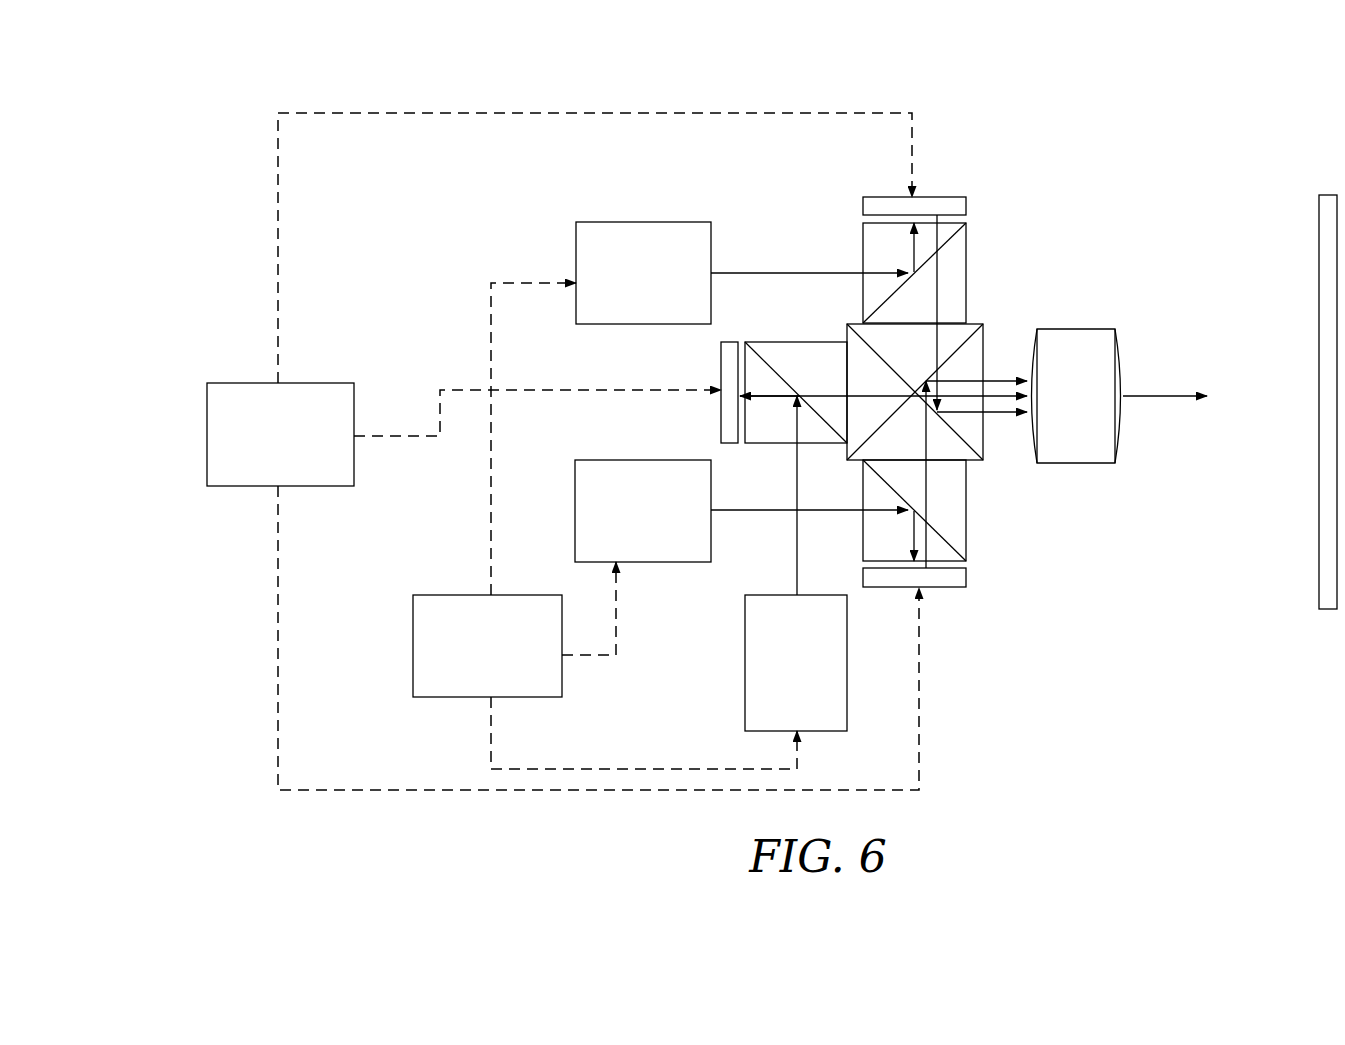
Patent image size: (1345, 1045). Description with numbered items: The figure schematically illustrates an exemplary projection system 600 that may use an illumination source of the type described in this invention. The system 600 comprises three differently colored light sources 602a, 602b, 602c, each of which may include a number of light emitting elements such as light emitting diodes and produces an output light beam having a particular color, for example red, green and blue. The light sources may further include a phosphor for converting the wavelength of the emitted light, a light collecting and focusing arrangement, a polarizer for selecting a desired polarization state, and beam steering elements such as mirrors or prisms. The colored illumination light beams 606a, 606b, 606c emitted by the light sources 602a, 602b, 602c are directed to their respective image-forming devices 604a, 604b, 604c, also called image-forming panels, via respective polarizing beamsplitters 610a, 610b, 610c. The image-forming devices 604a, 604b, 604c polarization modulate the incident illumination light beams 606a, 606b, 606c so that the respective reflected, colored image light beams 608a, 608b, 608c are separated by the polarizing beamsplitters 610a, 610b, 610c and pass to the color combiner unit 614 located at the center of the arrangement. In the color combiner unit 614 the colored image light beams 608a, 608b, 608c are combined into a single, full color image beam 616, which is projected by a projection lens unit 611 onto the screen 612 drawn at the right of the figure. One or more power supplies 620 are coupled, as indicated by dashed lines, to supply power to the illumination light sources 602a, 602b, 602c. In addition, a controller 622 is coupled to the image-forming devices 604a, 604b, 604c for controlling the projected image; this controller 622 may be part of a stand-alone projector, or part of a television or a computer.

The projection system 600 is at (267, 83).
The light source 602a is at (576, 247).
The light source 602b is at (745, 677).
The light source 602c is at (575, 488).
The image-forming device 604a is at (953, 199).
The image-forming device 604b is at (720, 381).
The image-forming device 604c is at (940, 587).
The illumination light beam 606a is at (738, 273).
The illumination light beam 606b is at (805, 592).
The illumination light beam 606c is at (735, 510).
The image light beam 608a is at (940, 283).
The image light beam 608b is at (743, 449).
The image light beam 608c is at (940, 514).
The polarizing beamsplitter 610a is at (863, 246).
The polarizing beamsplitter 610b is at (780, 342).
The polarizing beamsplitter 610c is at (966, 561).
The projection lens unit 611 is at (1086, 329).
The screen 612 is at (1316, 236).
The color combiner unit 614 is at (983, 325).
The full color image beam 616 is at (1168, 402).
The power supply 620 is at (466, 658).
The controller 622 is at (258, 447).